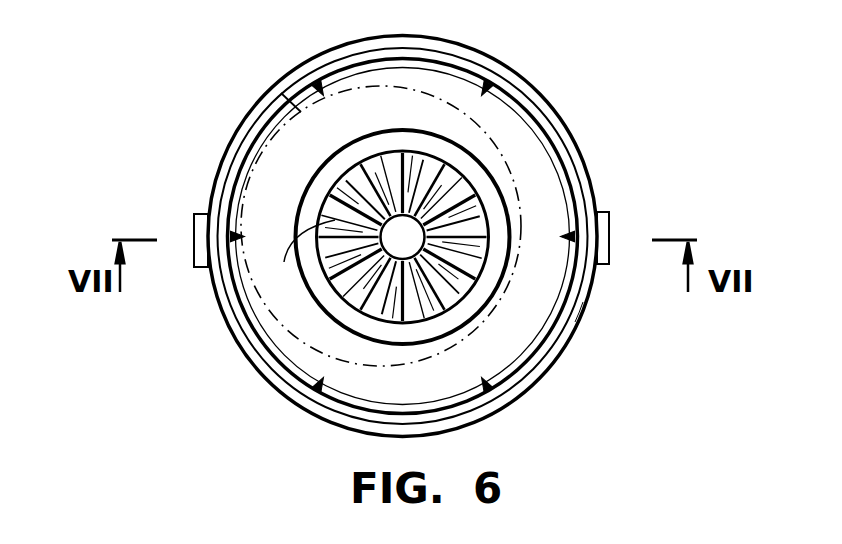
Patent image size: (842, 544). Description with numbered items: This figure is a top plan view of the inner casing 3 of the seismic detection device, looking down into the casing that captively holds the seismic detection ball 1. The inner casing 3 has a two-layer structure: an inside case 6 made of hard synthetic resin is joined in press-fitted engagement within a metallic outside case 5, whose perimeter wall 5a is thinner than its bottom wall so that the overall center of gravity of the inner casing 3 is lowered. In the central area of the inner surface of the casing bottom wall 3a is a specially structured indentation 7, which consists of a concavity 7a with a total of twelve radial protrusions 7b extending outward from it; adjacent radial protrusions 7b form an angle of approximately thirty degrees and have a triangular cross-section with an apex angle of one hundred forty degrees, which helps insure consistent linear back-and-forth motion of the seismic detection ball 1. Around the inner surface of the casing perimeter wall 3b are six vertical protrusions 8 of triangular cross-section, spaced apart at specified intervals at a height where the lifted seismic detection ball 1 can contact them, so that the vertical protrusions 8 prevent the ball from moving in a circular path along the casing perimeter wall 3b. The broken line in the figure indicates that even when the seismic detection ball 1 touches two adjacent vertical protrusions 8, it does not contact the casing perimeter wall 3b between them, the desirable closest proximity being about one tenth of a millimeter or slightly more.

The seismic detection ball 1 is at (273, 85).
The inner casing 3 is at (596, 96).
The casing bottom wall 3a is at (510, 295).
The casing perimeter wall 3b is at (585, 310).
The outside case 5 is at (227, 330).
The perimeter wall 5a is at (268, 388).
The inside case 6 is at (231, 298).
The indentation 7 is at (481, 237).
The concavity 7a is at (423, 322).
The radial protrusions 7b is at (305, 278).
The vertical protrusions 8 is at (325, 96).